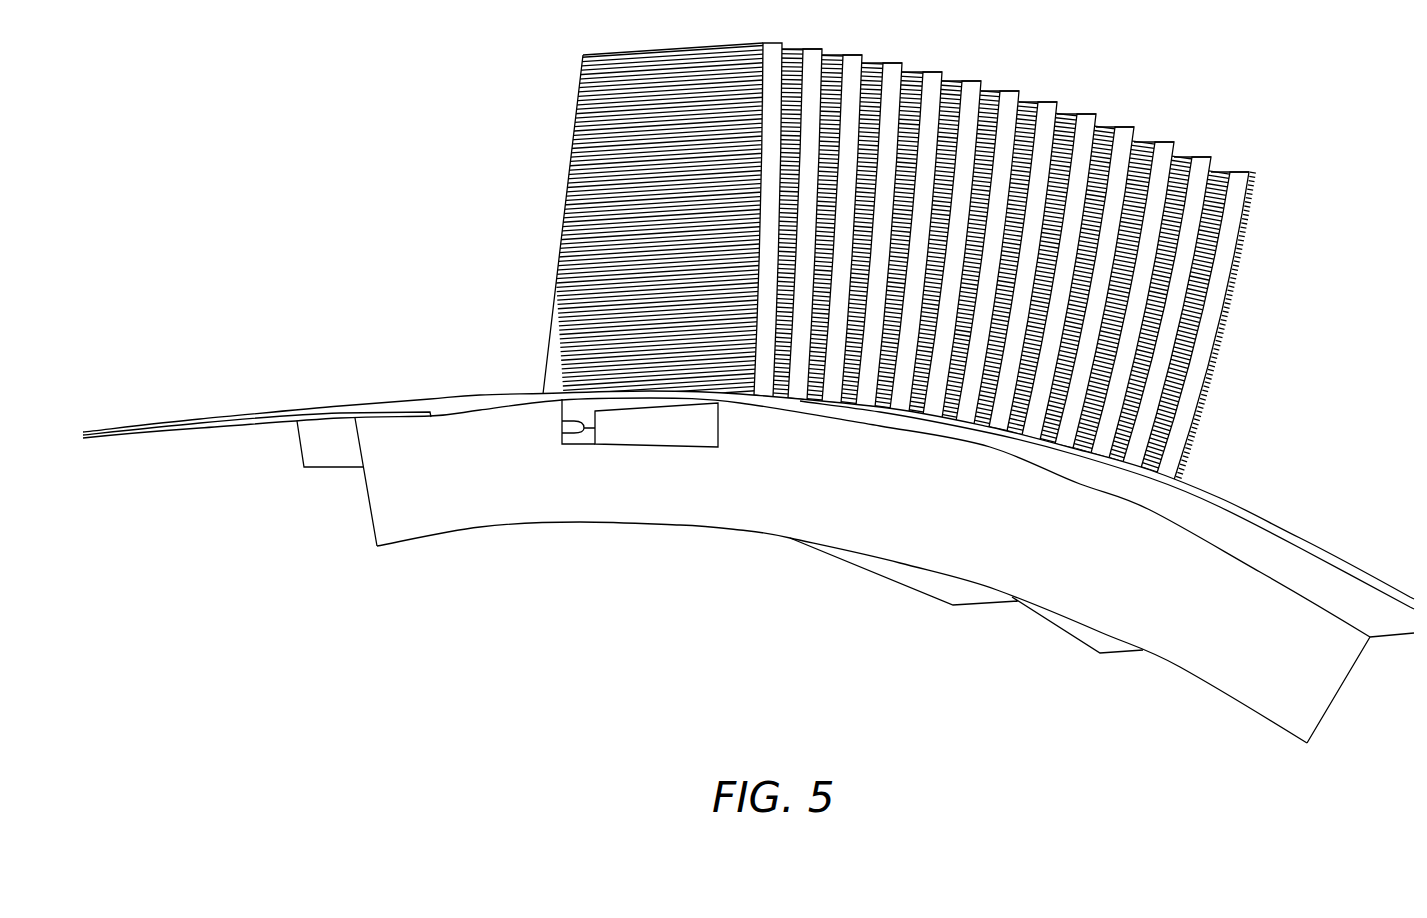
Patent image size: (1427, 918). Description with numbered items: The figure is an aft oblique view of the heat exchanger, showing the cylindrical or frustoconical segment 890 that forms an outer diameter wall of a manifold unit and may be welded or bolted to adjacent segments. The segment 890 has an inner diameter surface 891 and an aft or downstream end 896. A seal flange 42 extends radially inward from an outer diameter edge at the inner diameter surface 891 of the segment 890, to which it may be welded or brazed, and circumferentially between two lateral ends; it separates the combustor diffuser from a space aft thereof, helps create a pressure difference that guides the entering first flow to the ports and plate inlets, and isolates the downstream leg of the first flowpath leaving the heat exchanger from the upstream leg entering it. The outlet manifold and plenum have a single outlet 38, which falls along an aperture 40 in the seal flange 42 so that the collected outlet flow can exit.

The outlet 38 is at (635, 458).
The aperture 40 is at (708, 428).
The seal flange 42 is at (748, 567).
The segment 890 is at (1256, 490).
The inner diameter surface 891 is at (1222, 525).
The aft end 896 is at (1333, 557).